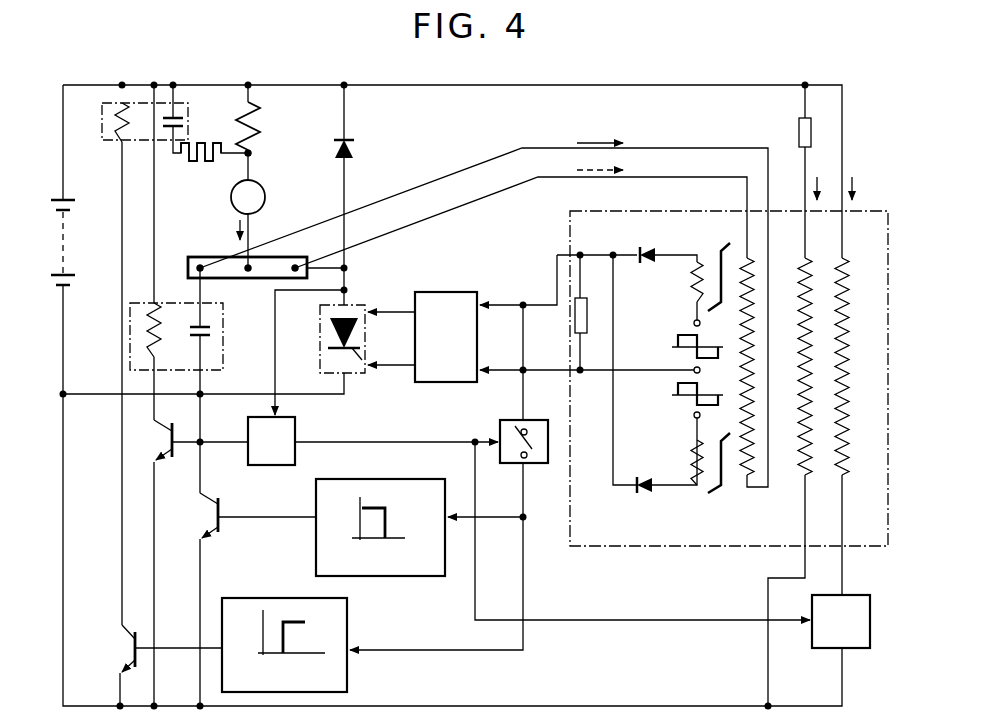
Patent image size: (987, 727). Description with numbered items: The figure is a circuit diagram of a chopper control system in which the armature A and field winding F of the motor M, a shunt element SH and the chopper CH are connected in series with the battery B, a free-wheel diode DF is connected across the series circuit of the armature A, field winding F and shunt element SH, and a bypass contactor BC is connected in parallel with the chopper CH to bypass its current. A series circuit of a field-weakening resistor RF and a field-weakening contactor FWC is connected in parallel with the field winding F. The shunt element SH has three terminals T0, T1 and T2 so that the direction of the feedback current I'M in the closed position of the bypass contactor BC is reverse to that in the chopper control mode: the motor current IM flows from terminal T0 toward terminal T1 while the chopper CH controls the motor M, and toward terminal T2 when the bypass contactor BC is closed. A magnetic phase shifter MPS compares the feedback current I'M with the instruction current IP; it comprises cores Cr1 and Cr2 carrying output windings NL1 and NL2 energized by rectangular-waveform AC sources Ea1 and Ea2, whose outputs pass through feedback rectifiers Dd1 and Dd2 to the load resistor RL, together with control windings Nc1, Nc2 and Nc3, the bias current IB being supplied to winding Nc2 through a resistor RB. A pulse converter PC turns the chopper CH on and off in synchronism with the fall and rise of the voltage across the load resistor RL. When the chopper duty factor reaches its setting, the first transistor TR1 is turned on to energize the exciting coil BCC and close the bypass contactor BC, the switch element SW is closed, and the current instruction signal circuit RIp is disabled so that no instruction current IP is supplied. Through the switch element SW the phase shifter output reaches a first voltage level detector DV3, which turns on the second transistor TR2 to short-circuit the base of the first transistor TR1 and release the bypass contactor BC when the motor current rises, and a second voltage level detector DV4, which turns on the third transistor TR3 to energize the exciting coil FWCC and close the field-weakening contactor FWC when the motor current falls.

The battery B is at (58, 246).
The exciting coil for the field-weakening contactor FWCC is at (122, 103).
The field-weakening contactor FWC is at (181, 112).
The field winding F is at (238, 130).
The motor M is at (280, 159).
The field-weakening resistor RF is at (200, 166).
The armature A is at (248, 197).
The motor current IM is at (238, 234).
The shunt element SH is at (216, 257).
The terminal of the shunt element T2 is at (196, 264).
The terminal of the shunt element T1 is at (292, 261).
The terminal of the shunt element T0 is at (252, 278).
The exciting coil for the bypass contactor BCC is at (180, 312).
The bypass contactor BC is at (215, 338).
The free-wheel diode DF is at (348, 147).
The chopper CH is at (362, 375).
The pulse converter PC is at (446, 337).
The switch element SW is at (498, 440).
The first transistor TR1 is at (144, 440).
The second transistor TR2 is at (208, 520).
The third transistor TR3 is at (132, 651).
The first voltage level detector DV3 is at (328, 482).
The second voltage level detector DV4 is at (224, 602).
The feedback current I'M is at (593, 139).
The bias resistor RB is at (799, 135).
The bias current IB is at (818, 174).
The instruction current IP is at (856, 174).
The magnetic phase shifter MPS is at (888, 252).
The feedback rectifier Dd1 is at (652, 245).
The core Cr1 is at (726, 250).
The output winding NL1 is at (691, 287).
The AC power source Ea1 is at (686, 337).
The AC power source Ea2 is at (678, 386).
The output winding NL2 is at (691, 454).
The feedback rectifier Dd2 is at (646, 492).
The core Cr2 is at (708, 494).
The control winding Nc3 is at (757, 489).
The control winding Nc2 is at (805, 478).
The control winding Nc1 is at (842, 478).
The load resistor RL is at (575, 318).
The current instruction signal circuit RIp is at (841, 621).